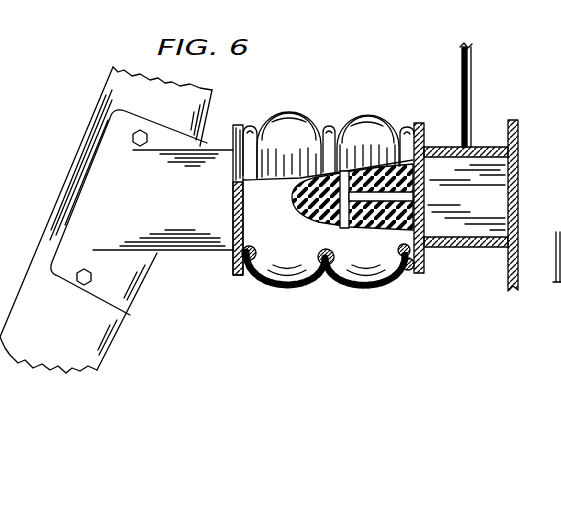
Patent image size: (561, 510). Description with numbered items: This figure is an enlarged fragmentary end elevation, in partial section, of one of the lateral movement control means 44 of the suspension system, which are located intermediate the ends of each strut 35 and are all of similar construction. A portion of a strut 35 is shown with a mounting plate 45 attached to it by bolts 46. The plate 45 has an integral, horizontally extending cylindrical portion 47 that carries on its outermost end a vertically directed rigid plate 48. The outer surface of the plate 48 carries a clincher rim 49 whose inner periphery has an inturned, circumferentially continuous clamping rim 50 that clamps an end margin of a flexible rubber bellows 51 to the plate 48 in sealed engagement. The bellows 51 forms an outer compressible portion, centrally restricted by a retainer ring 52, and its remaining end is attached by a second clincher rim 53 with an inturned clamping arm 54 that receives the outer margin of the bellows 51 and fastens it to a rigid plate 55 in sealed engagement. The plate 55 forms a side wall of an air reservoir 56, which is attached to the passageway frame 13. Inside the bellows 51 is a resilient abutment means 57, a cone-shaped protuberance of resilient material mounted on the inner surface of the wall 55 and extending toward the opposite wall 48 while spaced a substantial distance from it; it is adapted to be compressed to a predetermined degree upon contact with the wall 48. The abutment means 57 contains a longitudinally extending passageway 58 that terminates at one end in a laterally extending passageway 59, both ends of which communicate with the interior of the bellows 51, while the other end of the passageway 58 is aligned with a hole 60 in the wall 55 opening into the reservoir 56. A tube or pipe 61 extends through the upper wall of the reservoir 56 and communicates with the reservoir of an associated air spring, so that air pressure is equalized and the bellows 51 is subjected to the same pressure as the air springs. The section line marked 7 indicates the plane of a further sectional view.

The passageway frame 13 is at (519, 158).
The strut 35 is at (182, 86).
The lateral movement control means 44 is at (275, 101).
The mounting plate 45 is at (107, 153).
The bolts 46 is at (147, 134).
The cylindrical portion 47 is at (206, 247).
The rigid plate 48 is at (237, 125).
The clincher rim 49 is at (252, 266).
The clamping rim 50 is at (255, 248).
The flexible rubber bellows 51 is at (286, 118).
The retainer ring 52 is at (329, 126).
The second clincher rim 53 is at (409, 271).
The clamping arm 54 is at (399, 252).
The rigid plate 55 is at (419, 123).
The air reservoir 56 is at (483, 165).
The resilient abutment means 57 is at (308, 211).
The longitudinally extending passageway 58 is at (376, 194).
The laterally extending passageway 59 is at (345, 176).
The hole 60 is at (427, 197).
The tube or pipe 61 is at (472, 80).
The section line 7- 7 is at (218, 200).